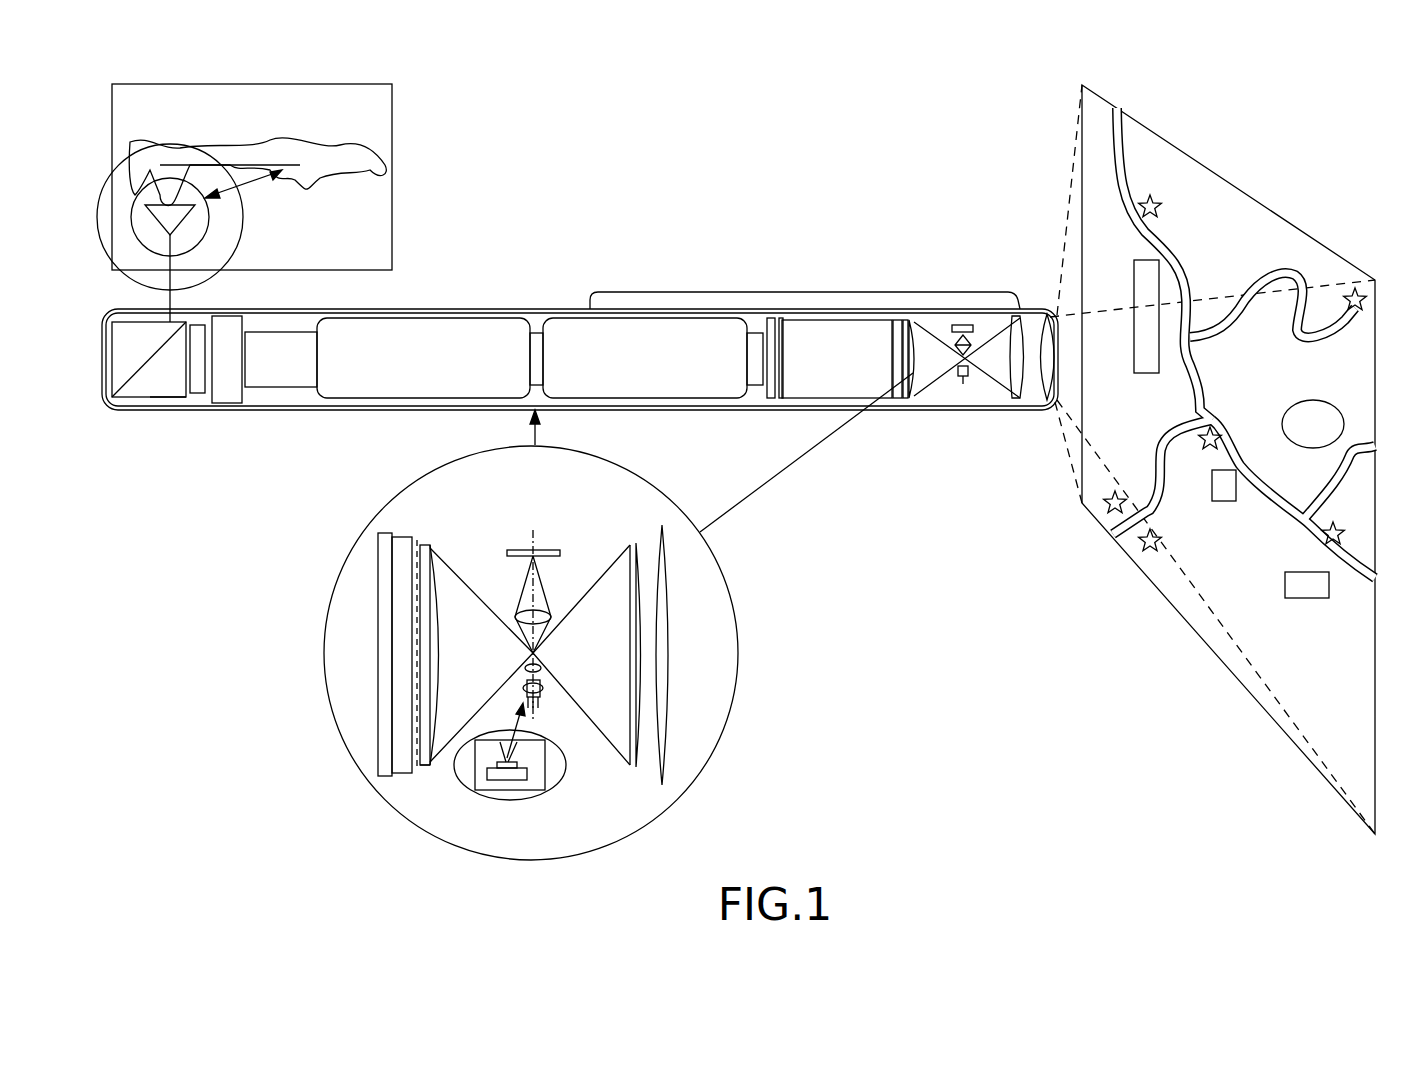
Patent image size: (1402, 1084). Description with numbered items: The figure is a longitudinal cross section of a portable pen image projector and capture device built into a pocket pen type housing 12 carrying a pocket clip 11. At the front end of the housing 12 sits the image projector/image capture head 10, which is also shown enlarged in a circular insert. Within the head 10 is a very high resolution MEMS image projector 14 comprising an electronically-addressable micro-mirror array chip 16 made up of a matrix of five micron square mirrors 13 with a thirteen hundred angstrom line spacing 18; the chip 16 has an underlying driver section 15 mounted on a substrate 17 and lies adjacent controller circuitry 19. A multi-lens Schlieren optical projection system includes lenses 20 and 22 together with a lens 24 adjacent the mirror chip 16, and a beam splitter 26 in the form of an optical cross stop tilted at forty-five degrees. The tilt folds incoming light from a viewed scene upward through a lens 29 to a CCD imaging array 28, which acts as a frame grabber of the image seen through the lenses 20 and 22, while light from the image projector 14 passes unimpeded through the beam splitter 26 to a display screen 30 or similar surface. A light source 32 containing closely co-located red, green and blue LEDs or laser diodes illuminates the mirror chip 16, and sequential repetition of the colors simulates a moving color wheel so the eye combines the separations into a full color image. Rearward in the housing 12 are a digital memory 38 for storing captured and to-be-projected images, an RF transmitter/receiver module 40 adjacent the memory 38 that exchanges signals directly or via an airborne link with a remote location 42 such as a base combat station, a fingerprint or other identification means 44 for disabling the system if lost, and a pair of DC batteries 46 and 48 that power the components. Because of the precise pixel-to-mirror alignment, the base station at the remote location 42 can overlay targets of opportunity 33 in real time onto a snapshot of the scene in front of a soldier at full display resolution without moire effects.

The image projector/image capture head 10 is at (960, 446).
The pocket clip 11 is at (735, 292).
The pocket pen type housing 12 is at (562, 308).
The mirrors 13 is at (422, 758).
The MEMS image projector 14 is at (870, 345).
The driver section 15 is at (900, 400).
The micro-mirror array chip 16 is at (906, 400).
The substrate 17 is at (888, 372).
The line spacing 18 is at (437, 690).
The controller circuitry 19 is at (793, 397).
The lens 20 is at (1016, 318).
The lens 22 is at (1040, 388).
The lens 24 is at (925, 385).
The beam splitter 26 is at (968, 357).
The CCD imaging array 28 is at (960, 323).
The lens 29 is at (552, 612).
The display screen 30 is at (1282, 240).
The light source 32 is at (967, 382).
The targets of opportunity 33 is at (1162, 207).
The digital memory 38 is at (172, 398).
The RF transmitter/receiver module 40 is at (117, 368).
The remote location 42 is at (392, 115).
The identification means 44 is at (235, 403).
The DC battery 46 is at (430, 388).
The DC battery 48 is at (657, 398).